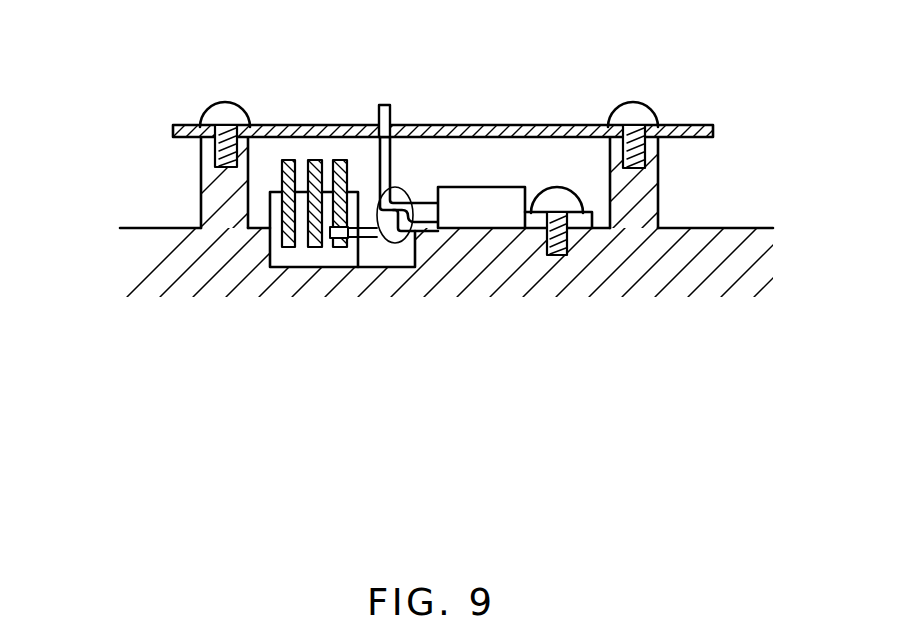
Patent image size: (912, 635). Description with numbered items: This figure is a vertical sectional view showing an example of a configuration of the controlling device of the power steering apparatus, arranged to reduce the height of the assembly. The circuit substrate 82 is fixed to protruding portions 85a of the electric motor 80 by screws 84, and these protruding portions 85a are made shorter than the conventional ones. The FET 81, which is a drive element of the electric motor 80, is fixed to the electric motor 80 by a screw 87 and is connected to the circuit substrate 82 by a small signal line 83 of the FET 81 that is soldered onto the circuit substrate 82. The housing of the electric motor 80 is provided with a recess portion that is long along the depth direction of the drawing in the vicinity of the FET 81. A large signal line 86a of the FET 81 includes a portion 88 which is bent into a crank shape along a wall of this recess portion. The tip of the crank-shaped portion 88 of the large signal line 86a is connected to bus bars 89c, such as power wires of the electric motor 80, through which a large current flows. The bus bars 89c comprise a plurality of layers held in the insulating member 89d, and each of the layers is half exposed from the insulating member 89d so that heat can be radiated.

The electric motor 80 is at (658, 270).
The FET 81 is at (467, 220).
The circuit substrate 82 is at (183, 127).
The small signal line 83 is at (388, 108).
The screws 84 is at (232, 107).
The protruding portions 85a is at (202, 205).
The large signal line 86a is at (367, 232).
The screw 87 is at (558, 189).
The portion bent into a crank shape 88 is at (400, 187).
The bus bars 89c is at (340, 240).
The insulating member 89d is at (295, 267).